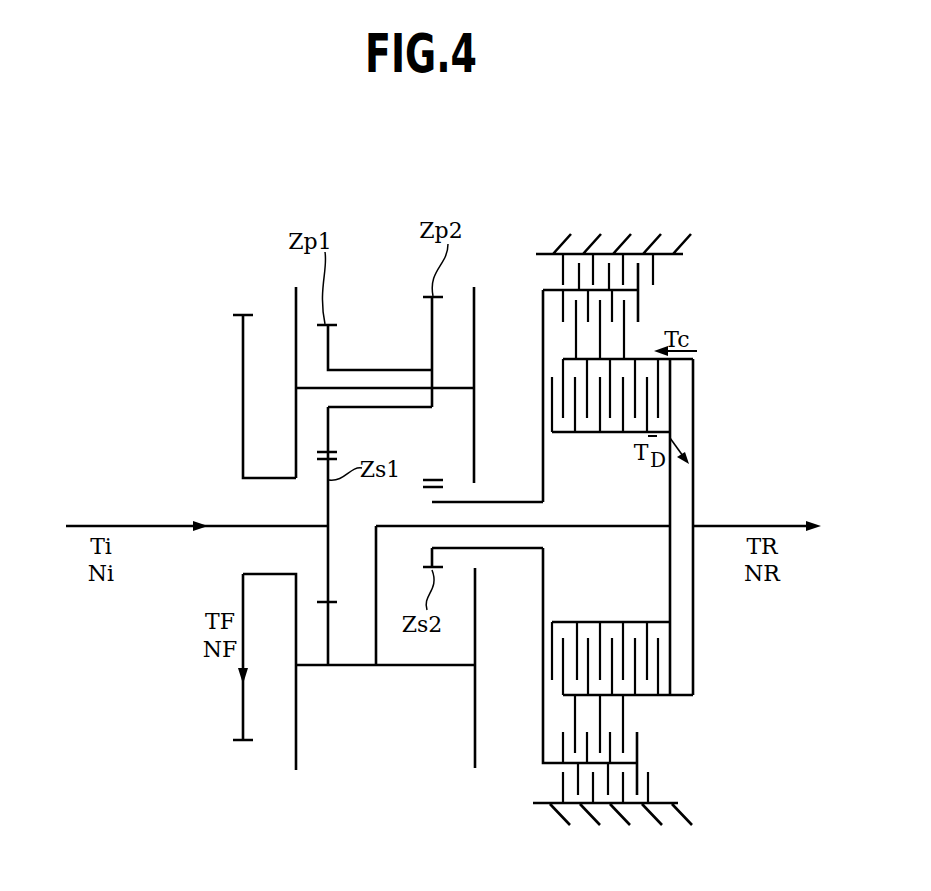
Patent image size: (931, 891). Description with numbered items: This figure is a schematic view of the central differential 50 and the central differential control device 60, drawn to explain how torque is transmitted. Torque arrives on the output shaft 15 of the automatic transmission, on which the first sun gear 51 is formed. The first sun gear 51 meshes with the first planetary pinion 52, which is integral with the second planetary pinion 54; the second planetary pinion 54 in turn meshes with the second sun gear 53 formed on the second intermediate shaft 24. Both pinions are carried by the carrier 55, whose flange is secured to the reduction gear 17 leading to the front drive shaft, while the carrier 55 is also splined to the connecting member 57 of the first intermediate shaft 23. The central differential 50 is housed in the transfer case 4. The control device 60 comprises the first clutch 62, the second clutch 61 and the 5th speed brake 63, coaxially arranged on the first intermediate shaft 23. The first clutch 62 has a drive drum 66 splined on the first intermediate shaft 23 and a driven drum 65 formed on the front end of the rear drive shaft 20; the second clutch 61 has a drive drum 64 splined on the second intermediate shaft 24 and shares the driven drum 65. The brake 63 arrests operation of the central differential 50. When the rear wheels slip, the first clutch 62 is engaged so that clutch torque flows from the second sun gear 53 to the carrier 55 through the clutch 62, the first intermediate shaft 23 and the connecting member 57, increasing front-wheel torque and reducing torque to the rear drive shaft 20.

The transfer case 4 is at (590, 252).
The output shaft 15 is at (268, 525).
The reduction gear 17 is at (243, 314).
The rear drive shaft 20 is at (762, 525).
The first intermediate shaft 23 is at (597, 525).
The second intermediate shaft 24 is at (526, 504).
The central differential 50 is at (370, 259).
The first sun gear 51 is at (328, 604).
The first planetary pinion 52 is at (328, 347).
The second sun gear 53 is at (430, 557).
The second planetary pinion 54 is at (430, 325).
The carrier 55 is at (358, 667).
The connecting member 57 is at (375, 602).
The central differential control device 60 is at (727, 307).
The second clutch 61 is at (603, 330).
The first clutch 62 is at (655, 397).
The 5th speed brake 63 is at (640, 273).
The drive drum 64 is at (542, 342).
The driven drum 65 is at (694, 410).
The drive drum 66 is at (668, 590).